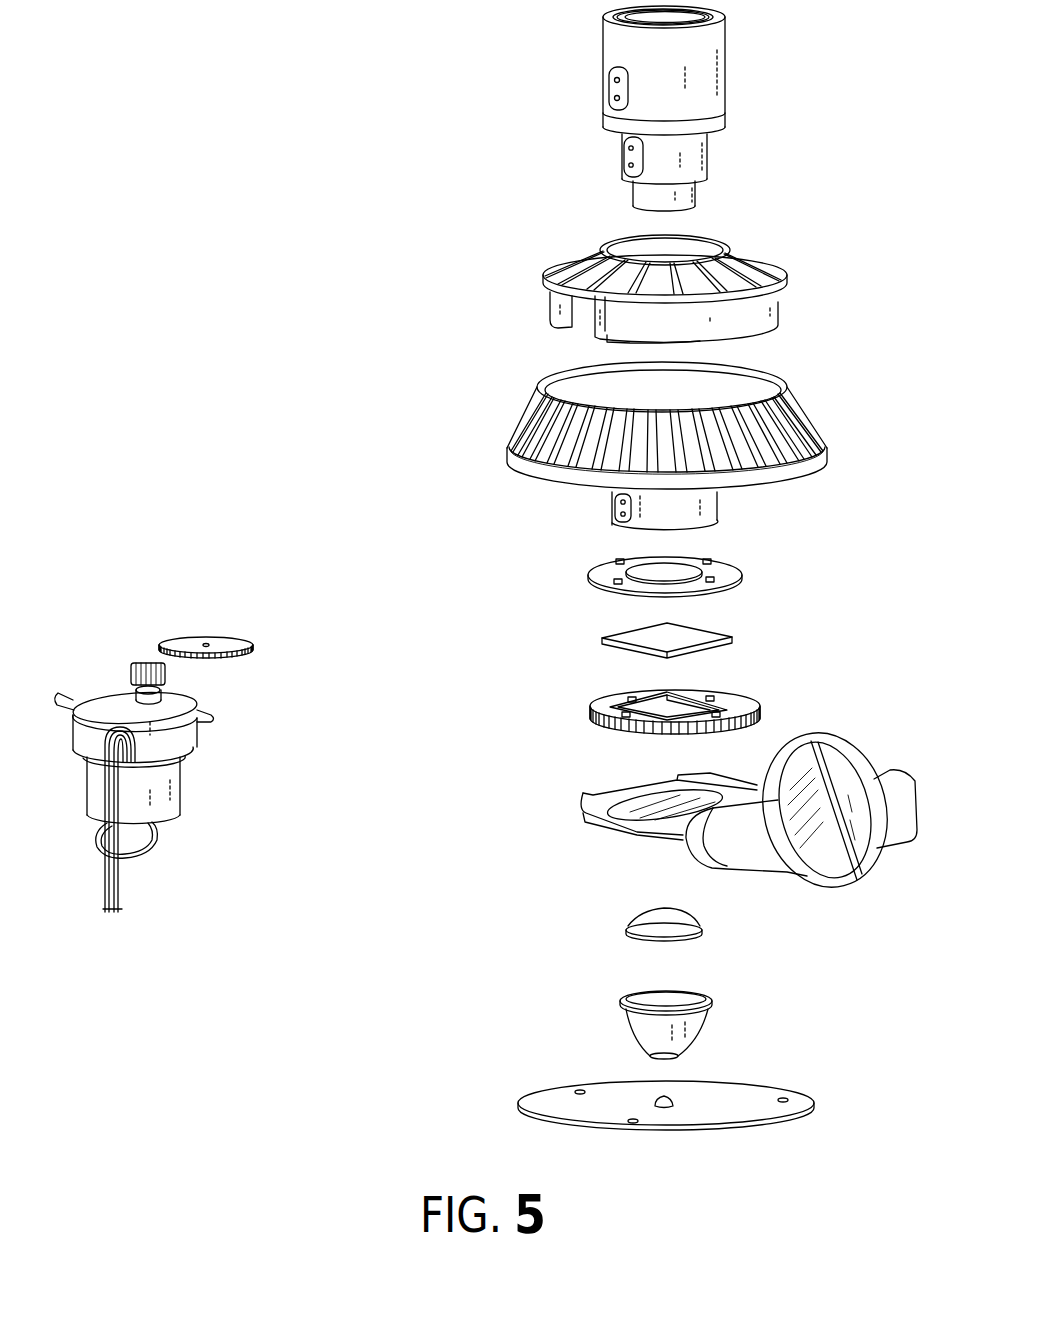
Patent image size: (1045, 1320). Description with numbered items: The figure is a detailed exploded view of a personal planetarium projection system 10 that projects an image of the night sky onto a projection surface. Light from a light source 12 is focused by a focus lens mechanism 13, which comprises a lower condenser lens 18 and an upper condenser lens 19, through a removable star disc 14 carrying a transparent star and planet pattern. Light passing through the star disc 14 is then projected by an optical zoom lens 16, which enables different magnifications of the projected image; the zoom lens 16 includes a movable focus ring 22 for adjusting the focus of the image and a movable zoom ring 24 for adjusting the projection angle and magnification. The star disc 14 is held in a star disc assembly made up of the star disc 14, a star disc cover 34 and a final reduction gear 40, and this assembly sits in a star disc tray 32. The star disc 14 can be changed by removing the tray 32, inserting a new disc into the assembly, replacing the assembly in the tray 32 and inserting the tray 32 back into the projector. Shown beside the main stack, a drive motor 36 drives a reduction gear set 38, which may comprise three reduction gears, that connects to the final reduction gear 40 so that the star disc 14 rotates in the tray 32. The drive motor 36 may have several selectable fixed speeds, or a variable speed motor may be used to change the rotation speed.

The personal planetarium projection system 10 is at (851, 155).
The light source 12 is at (664, 1100).
The focus lens mechanism 13 is at (708, 991).
The removable star disc 14 is at (604, 636).
The optical zoom lens 16 is at (724, 84).
The lower condenser lens 18 is at (625, 1007).
The upper condenser lens 19 is at (627, 927).
The movable focus ring 22 is at (783, 413).
The movable zoom ring 24 is at (770, 262).
The star disc tray 32 is at (588, 808).
The star disc cover 34 is at (602, 572).
The drive motor 36 is at (178, 733).
The reduction gear set 38 is at (227, 643).
The final reduction gear 40 is at (590, 712).